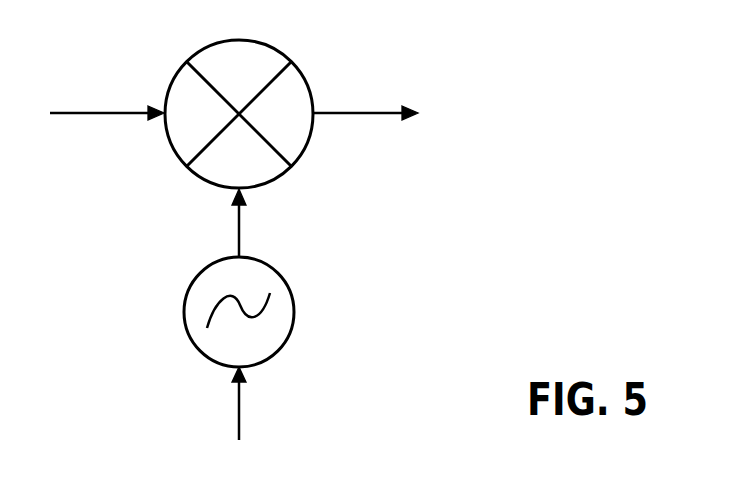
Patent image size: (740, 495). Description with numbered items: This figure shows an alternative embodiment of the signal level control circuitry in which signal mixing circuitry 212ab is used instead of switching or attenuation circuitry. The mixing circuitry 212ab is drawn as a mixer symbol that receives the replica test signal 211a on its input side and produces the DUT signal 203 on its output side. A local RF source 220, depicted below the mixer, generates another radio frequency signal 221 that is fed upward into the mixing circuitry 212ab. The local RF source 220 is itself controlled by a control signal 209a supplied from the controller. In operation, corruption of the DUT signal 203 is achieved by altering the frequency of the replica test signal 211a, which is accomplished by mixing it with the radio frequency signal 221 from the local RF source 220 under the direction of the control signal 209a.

The signal mixing circuitry 212ab is at (240, 40).
The replica test signal 211a is at (103, 111).
The DUT signal 203 is at (330, 112).
The radio frequency signal 221 is at (240, 219).
The local RF source 220 is at (275, 268).
The control signal 209a is at (240, 402).